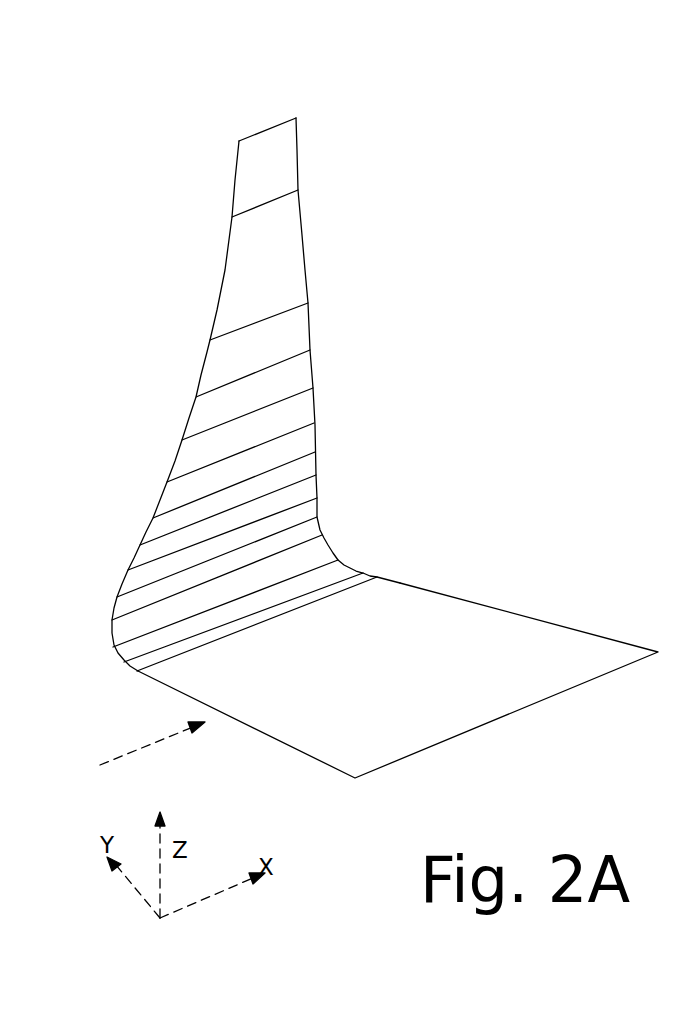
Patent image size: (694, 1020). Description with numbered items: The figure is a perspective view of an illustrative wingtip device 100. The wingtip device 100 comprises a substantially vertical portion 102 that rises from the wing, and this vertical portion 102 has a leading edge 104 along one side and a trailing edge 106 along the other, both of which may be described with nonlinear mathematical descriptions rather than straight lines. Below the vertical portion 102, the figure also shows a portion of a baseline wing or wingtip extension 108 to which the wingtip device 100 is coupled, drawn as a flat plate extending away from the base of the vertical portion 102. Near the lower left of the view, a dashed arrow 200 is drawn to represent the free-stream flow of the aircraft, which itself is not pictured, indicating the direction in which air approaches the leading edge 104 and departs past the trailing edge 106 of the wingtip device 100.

The wingtip device 100 is at (378, 438).
The substantially vertical portion 102 is at (253, 323).
The leading edge 104 is at (225, 268).
The trailing edge 106 is at (315, 448).
The baseline wing or wingtip extension 108 is at (427, 590).
The arrow 200 is at (148, 745).